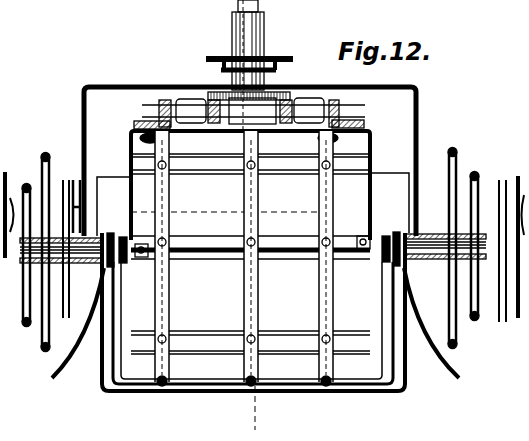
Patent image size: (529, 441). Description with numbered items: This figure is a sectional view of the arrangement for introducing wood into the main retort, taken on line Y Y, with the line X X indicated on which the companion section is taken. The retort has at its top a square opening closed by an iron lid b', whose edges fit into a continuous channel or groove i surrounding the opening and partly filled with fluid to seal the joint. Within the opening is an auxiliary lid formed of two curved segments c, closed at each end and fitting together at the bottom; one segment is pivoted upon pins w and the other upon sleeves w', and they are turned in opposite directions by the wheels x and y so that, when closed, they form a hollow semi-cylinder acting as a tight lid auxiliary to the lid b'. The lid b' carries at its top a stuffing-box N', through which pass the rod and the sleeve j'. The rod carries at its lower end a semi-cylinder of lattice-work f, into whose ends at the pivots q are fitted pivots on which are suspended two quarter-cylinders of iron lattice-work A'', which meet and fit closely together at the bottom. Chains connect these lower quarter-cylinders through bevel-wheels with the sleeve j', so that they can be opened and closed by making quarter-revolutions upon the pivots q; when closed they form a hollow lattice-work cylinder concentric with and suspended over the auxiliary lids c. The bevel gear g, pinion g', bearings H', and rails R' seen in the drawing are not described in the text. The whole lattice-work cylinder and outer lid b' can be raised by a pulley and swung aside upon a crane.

The sleeve j' is at (261, 65).
The stuffing-box N' is at (260, 54).
The iron lid b' is at (261, 149).
The bevel gear g is at (253, 108).
The bevel pinion g' is at (299, 61).
The bearing H' is at (249, 121).
The semi-cylinder of lattice-work f is at (246, 185).
The channel or groove i is at (206, 231).
The cross rail R' is at (250, 206).
The quarter-cylinders of iron lattice-work A'' is at (250, 258).
The pivot q is at (141, 262).
The curved segments c is at (255, 312).
The pins w is at (244, 244).
The sleeves w' is at (251, 289).
The wheel y is at (253, 240).
The wheel x is at (264, 259).
The section line X X is at (267, 408).